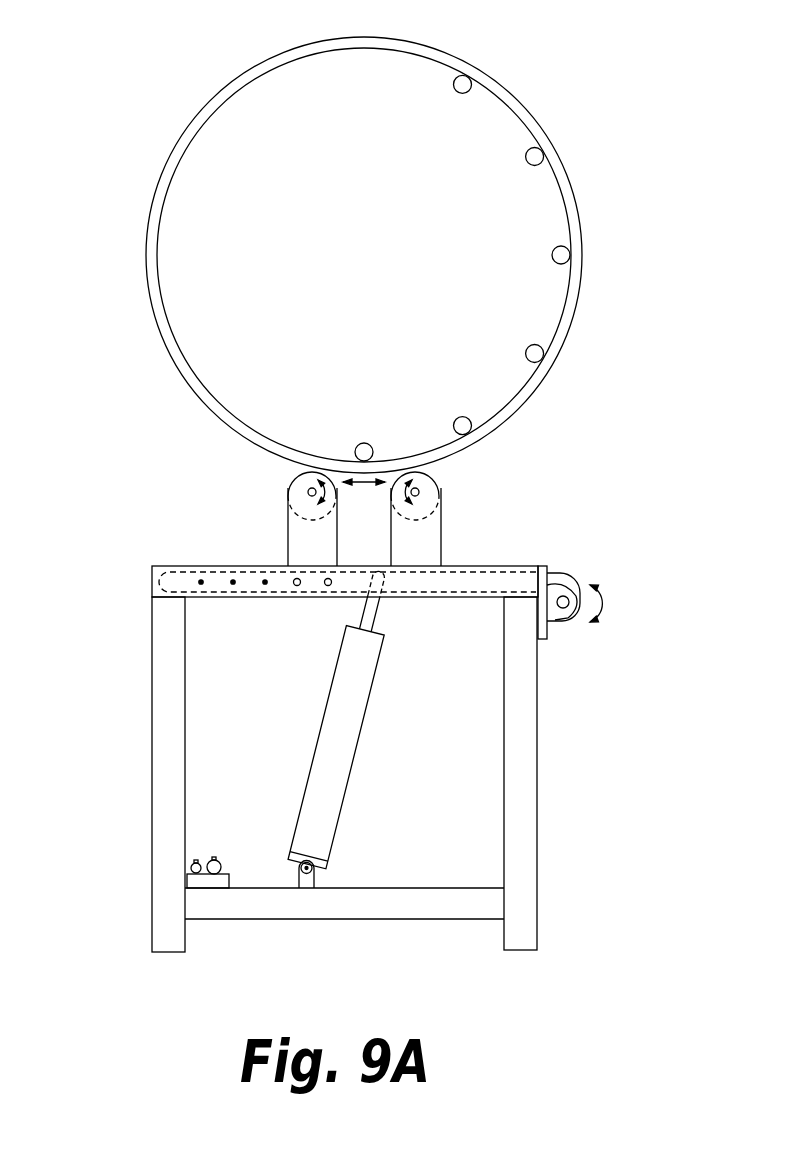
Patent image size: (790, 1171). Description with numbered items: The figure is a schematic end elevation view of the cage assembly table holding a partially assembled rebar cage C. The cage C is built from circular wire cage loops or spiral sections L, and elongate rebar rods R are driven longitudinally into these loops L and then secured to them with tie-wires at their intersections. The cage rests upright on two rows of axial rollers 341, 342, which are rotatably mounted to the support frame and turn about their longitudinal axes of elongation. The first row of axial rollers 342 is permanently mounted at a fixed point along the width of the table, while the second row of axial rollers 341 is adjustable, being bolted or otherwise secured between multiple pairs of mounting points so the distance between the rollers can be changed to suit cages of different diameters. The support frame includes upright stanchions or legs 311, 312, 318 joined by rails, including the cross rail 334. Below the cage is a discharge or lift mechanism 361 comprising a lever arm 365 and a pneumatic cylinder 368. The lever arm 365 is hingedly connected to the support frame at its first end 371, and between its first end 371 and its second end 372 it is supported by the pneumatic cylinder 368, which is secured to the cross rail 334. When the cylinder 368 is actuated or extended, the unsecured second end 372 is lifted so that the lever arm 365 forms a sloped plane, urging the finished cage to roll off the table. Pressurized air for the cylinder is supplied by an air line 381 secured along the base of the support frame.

The rebar cage C is at (368, 255).
The cage loop or spiral section L is at (575, 195).
The rebar rod R is at (552, 256).
The axial roller (second row) 341 is at (292, 486).
The axial roller (first row) 342 is at (433, 481).
The discharge or lift mechanism 361 is at (320, 743).
The second end of lever arm 372 is at (192, 556).
The first end of lever arm 371 is at (572, 556).
The lever arm 365 is at (440, 598).
The leg 318 is at (337, 607).
The leg 311 is at (168, 712).
The leg 312 is at (525, 772).
The pneumatic cylinder 368 is at (337, 760).
The air line 381 is at (215, 850).
The cross rail 334 is at (382, 901).